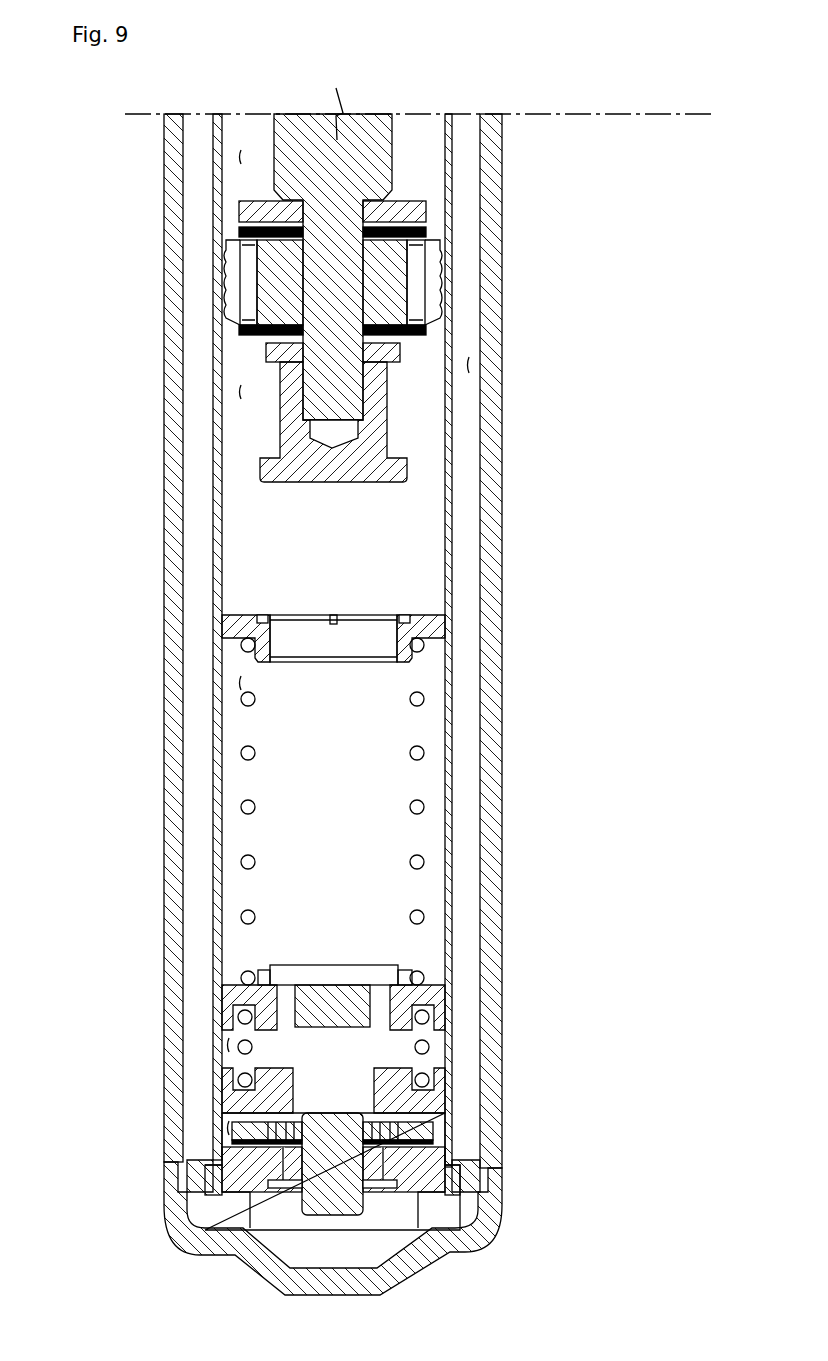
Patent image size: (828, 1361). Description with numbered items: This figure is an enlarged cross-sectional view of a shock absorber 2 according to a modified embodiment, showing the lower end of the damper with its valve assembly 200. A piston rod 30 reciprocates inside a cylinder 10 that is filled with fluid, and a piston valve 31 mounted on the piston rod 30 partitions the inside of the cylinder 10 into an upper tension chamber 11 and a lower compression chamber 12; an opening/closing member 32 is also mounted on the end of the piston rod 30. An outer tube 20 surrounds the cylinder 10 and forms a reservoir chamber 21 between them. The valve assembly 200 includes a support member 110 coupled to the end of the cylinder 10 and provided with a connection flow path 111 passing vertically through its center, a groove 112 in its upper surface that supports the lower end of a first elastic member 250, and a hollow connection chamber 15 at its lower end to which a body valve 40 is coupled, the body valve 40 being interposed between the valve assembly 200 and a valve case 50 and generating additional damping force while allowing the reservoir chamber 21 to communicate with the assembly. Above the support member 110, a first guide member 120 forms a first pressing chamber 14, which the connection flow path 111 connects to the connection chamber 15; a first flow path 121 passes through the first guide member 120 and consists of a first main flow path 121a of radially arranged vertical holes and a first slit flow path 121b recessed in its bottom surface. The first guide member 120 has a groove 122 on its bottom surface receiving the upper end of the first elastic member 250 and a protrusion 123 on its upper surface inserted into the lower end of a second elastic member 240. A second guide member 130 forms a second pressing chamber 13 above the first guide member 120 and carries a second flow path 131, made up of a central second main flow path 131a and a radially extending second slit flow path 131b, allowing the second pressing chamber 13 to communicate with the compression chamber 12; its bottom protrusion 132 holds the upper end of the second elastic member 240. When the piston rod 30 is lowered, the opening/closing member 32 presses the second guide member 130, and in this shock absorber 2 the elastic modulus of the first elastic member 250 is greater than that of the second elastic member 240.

The shock absorber 2 is at (642, 227).
The cylinder 10 is at (218, 213).
The tension chamber 11 is at (239, 157).
The compression chamber 12 is at (239, 392).
The second pressing chamber 13 is at (239, 683).
The first pressing chamber 14 is at (228, 1045).
The connection chamber 15 is at (228, 1128).
The outer tube 20 is at (492, 277).
The reservoir chamber 21 is at (470, 365).
The piston rod 30 is at (385, 152).
The piston valve 31 is at (270, 277).
The opening/closing member 32 is at (370, 442).
The body valve 40 is at (228, 1180).
The valve case 50 is at (232, 1250).
The support member 110 is at (430, 1108).
The connection flow path 111 is at (285, 1102).
The groove 112 is at (430, 1095).
The first guide member 120 is at (397, 997).
The first flow path 121 is at (600, 1018).
The first main flow path 121a is at (385, 1007).
The first slit flow path 121b is at (352, 1028).
The groove 122 is at (238, 1014).
The protrusion 123 is at (258, 967).
The second guide member 130 is at (222, 620).
The second flow path 131 is at (600, 580).
The second main flow path 131a is at (390, 640).
The second slit flow path 131b is at (403, 616).
The protrusion 132 is at (243, 645).
The valve assembly 200 is at (283, 598).
The second elastic member 240 is at (422, 645).
The first elastic member 250 is at (238, 1080).